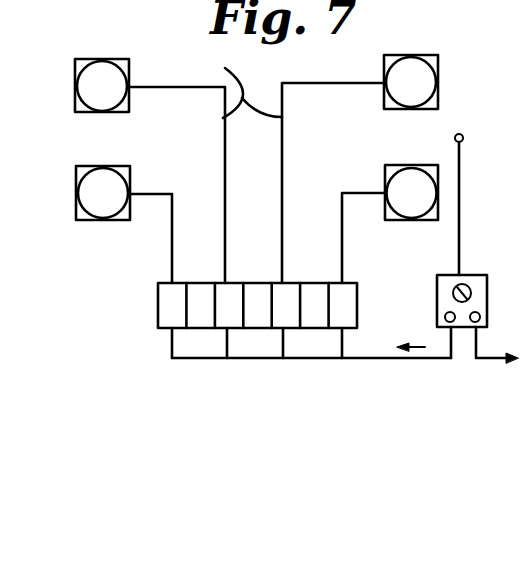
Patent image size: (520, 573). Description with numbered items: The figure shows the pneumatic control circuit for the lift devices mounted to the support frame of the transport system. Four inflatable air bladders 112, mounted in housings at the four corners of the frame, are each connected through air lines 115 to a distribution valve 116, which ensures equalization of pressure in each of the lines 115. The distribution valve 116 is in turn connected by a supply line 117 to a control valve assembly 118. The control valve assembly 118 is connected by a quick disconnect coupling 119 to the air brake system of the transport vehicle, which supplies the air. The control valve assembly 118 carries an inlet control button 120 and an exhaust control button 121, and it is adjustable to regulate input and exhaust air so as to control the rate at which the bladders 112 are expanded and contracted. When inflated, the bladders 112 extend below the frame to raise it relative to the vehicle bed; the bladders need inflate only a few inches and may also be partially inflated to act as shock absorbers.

The air bladders 112 is at (113, 165).
The air lines 115 is at (230, 86).
The distribution valve 116 is at (158, 307).
The supply line 117 is at (343, 360).
The control valve assembly 118 is at (437, 276).
The quick disconnect coupling 119 is at (495, 99).
The inlet control button 120 is at (437, 315).
The exhaust control button 121 is at (488, 301).